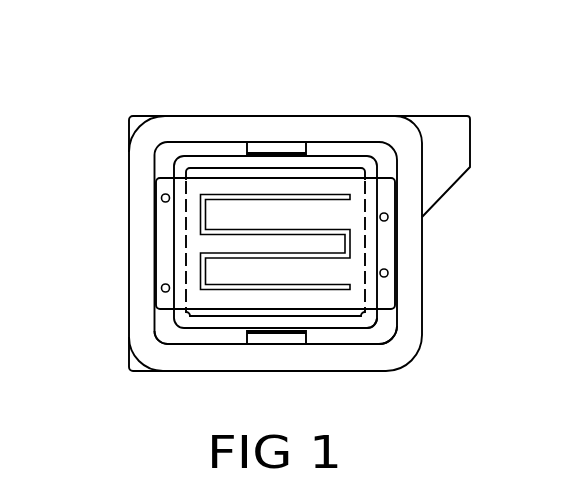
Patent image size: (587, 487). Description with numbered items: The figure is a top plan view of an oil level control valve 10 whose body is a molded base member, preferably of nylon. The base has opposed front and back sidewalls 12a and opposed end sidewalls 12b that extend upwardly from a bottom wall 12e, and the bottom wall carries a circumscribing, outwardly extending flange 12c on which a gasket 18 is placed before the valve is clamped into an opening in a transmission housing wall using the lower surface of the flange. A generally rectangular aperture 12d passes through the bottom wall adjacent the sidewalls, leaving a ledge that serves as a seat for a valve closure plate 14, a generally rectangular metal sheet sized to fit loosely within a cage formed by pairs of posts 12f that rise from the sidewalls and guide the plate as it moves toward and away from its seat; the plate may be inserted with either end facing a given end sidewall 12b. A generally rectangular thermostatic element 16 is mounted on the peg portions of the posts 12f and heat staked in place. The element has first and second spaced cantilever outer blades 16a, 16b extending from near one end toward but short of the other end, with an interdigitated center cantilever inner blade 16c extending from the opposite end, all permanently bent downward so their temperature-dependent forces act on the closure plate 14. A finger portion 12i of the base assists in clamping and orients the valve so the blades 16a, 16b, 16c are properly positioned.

The oil level control valve 10 is at (282, 219).
The sidewalls 12a is at (332, 150).
The sidewalls 12b is at (161, 322).
The flange 12c is at (133, 117).
The aperture 12d is at (193, 167).
The bottom wall 12e is at (235, 160).
The posts 12f is at (275, 150).
The finger portion 12i is at (455, 130).
The valve closure plate 14 is at (360, 325).
The thermostatic element 16 is at (385, 252).
The outer blade 16a is at (215, 213).
The outer blade 16b is at (223, 274).
The inner blade 16c is at (330, 245).
The gasket 18 is at (193, 355).